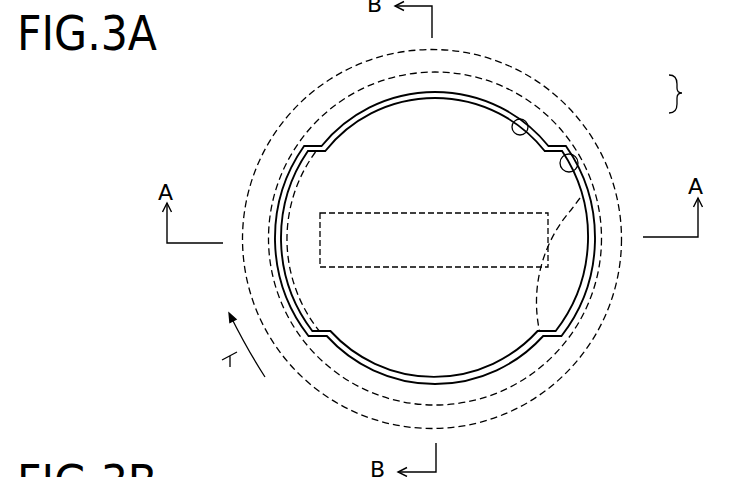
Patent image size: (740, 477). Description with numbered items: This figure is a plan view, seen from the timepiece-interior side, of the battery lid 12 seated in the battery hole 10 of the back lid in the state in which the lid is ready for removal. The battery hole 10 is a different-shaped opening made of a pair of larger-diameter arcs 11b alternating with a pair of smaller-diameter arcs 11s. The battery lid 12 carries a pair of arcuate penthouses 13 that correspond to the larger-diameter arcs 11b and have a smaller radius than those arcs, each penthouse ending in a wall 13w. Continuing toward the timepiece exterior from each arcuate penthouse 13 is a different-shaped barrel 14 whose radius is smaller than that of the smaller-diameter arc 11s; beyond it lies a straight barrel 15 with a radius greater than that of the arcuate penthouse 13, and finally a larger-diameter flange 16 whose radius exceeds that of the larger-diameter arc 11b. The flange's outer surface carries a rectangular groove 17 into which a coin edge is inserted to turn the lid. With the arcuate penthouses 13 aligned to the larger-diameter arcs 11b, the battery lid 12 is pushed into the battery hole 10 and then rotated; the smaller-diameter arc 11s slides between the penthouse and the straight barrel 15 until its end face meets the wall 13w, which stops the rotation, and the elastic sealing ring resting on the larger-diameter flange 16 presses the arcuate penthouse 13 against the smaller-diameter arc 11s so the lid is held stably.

The battery hole 10 is at (699, 94).
The smaller-diameter arc 11s is at (528, 126).
The larger-diameter arc 11b is at (567, 158).
The battery lid 12 is at (345, 128).
The arcuate penthouse 13 is at (286, 187).
The wall 13w is at (303, 310).
The different-shaped barrel 14 is at (528, 346).
The straight barrel 15 is at (529, 371).
The larger-diameter flange 16 is at (521, 398).
The rectangular groove 17 is at (463, 225).